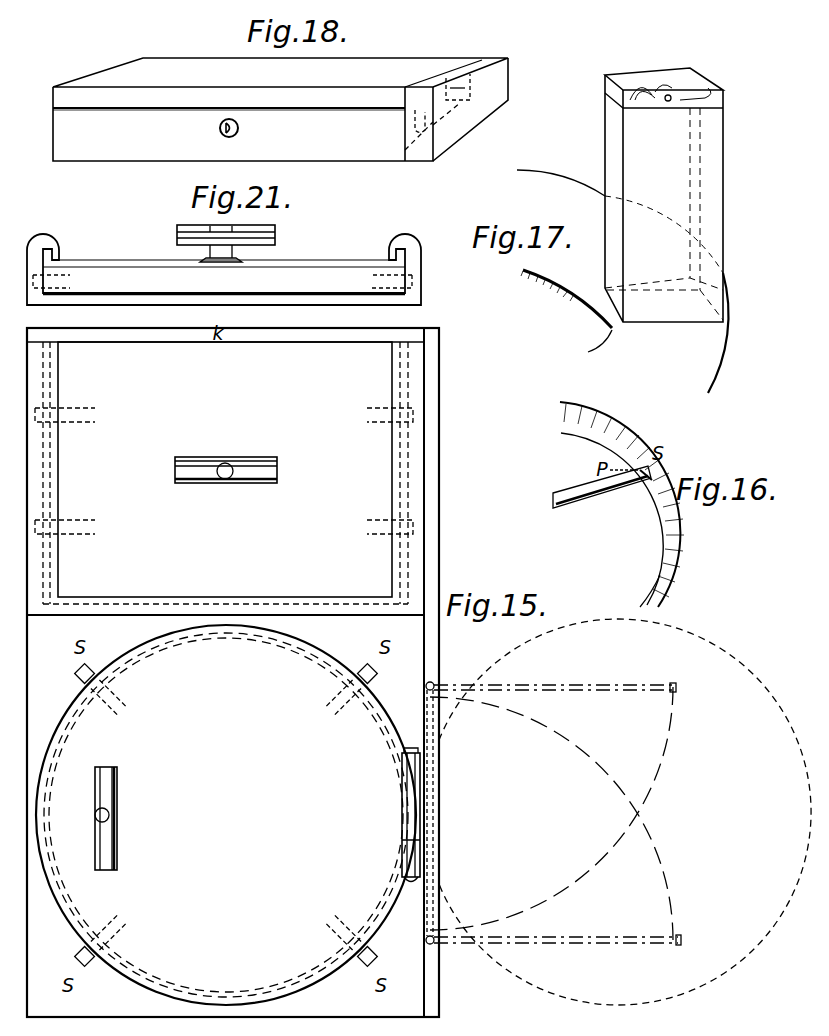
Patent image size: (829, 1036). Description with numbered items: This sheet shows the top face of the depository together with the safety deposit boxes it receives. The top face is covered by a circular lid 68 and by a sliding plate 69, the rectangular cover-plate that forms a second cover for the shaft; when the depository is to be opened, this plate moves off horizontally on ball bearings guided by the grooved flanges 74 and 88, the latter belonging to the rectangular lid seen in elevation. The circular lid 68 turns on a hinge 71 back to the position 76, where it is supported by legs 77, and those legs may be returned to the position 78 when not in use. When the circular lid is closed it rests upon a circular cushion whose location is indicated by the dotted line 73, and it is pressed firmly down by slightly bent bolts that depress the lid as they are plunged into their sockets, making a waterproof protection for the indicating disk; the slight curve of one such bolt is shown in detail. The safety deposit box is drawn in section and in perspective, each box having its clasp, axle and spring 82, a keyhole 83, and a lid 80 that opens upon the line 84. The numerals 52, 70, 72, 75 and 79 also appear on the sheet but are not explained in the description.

In FIG. 17, the drum body 52 is at (623, 281).
In FIG. 15, the circular lid 68 is at (226, 815).
In FIG. 15, the sliding plate 69 is at (225, 473).
In FIG. 15, the roller 70 is at (120, 818).
In FIG. 15, the hinge 71 is at (397, 815).
In FIG. 16, the holding strip 72 is at (602, 493).
In FIG. 15, the holding strip 72 is at (226, 815).
In FIG. 15, the dotted line indicating circular cushion 73 is at (130, 655).
In FIG. 15, the grooved flange 74 is at (400, 455).
In FIG. 15, the guide 75 is at (62, 528).
In FIG. 15, the turned-back position of lid 76 is at (625, 812).
In FIG. 15, the legs 77 is at (555, 814).
In FIG. 15, the returned position of legs 78 is at (440, 793).
In FIG. 15, the roller 79 is at (226, 483).
In FIG. 18, the lid 80 is at (280, 109).
In FIG. 17, the lid 80 is at (664, 195).
In FIG. 18, the clasp, axle and spring 82 is at (440, 118).
In FIG. 17, the clasp, axle and spring 82 is at (670, 73).
In FIG. 18, the keyhole 83 is at (219, 128).
In FIG. 18, the line upon which the lid opens 84 is at (53, 109).
In FIG. 21, the grooved flange 88 is at (412, 258).